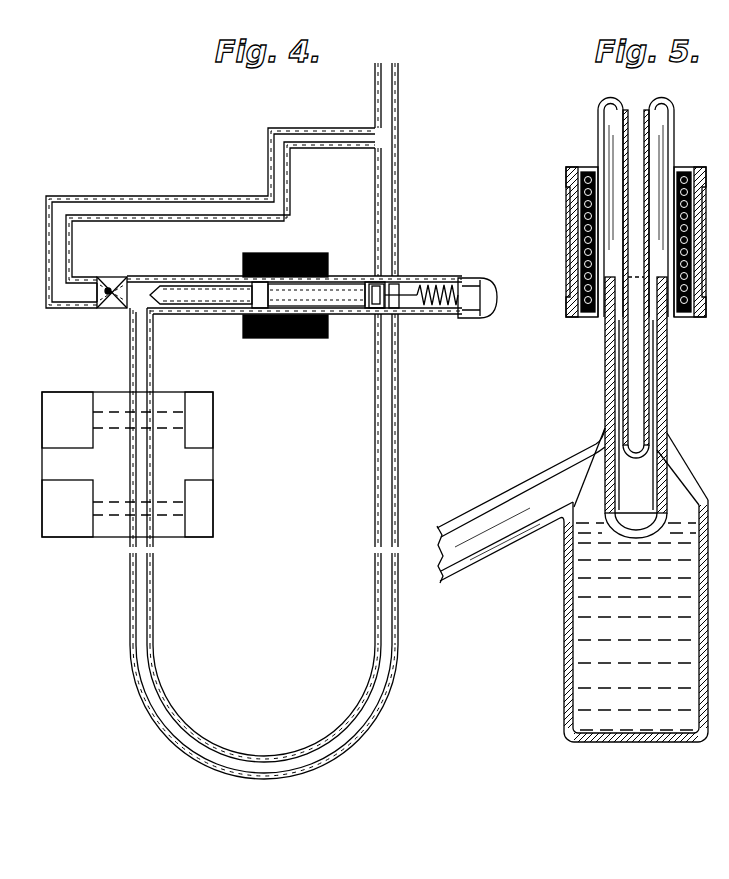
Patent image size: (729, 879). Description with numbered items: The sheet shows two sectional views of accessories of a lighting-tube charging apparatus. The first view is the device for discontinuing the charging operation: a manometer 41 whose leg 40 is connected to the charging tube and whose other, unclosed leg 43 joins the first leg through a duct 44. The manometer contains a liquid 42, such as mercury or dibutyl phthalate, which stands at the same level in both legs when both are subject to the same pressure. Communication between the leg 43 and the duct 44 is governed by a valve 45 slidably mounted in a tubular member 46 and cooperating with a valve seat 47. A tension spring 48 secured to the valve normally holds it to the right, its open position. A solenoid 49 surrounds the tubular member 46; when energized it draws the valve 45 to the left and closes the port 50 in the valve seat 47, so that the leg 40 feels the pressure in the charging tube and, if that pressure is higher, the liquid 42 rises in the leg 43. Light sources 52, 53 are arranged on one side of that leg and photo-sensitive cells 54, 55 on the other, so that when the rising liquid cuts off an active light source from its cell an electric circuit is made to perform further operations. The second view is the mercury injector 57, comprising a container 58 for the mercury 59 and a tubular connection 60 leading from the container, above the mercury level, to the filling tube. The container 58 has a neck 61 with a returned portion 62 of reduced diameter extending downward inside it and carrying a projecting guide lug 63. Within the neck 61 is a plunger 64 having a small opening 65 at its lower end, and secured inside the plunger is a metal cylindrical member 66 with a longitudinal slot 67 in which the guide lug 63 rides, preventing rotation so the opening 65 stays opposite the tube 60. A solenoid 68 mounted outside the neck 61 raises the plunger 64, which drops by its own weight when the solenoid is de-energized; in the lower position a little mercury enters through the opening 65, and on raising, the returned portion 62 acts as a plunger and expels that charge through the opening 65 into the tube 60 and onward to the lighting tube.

In FIG. 4, the leg 40 is at (375, 565).
In FIG. 4, the manometer 41 is at (369, 400).
In FIG. 4, the liquid 42 is at (143, 668).
In FIG. 4, the leg 43 is at (143, 562).
In FIG. 4, the duct 44 is at (215, 197).
In FIG. 4, the valve 45 is at (163, 302).
In FIG. 4, the tubular member 46 is at (170, 276).
In FIG. 4, the valve seat 47 is at (108, 287).
In FIG. 4, the tension spring 48 is at (444, 277).
In FIG. 4, the solenoid 49 is at (286, 254).
In FIG. 4, the port 50 is at (100, 296).
In FIG. 4, the light source 52 is at (200, 517).
In FIG. 4, the light source 53 is at (198, 425).
In FIG. 4, the photo-sensitive cell 54 is at (58, 508).
In FIG. 4, the photo-sensitive cell 55 is at (57, 417).
In FIG. 5, the mercury injector 57 is at (559, 705).
In FIG. 5, the container 58 is at (563, 602).
In FIG. 5, the mercury 59 is at (608, 633).
In FIG. 5, the tubular connection 60 is at (507, 513).
In FIG. 5, the neck 61 is at (667, 353).
In FIG. 5, the returned portion 62 is at (628, 152).
In FIG. 5, the guide lug 63 is at (623, 417).
In FIG. 5, the plunger 64 is at (660, 457).
In FIG. 5, the opening 65 is at (603, 527).
In FIG. 5, the metal cylindrical member 66 is at (660, 381).
In FIG. 5, the longitudinal slot 67 is at (621, 365).
In FIG. 5, the solenoid 68 is at (578, 233).